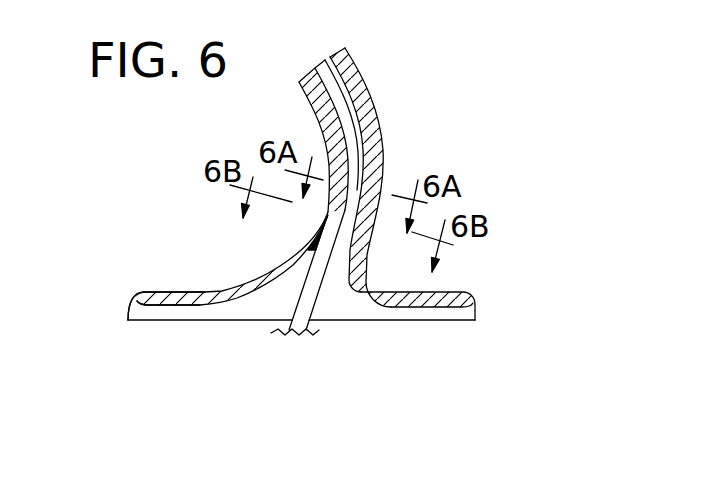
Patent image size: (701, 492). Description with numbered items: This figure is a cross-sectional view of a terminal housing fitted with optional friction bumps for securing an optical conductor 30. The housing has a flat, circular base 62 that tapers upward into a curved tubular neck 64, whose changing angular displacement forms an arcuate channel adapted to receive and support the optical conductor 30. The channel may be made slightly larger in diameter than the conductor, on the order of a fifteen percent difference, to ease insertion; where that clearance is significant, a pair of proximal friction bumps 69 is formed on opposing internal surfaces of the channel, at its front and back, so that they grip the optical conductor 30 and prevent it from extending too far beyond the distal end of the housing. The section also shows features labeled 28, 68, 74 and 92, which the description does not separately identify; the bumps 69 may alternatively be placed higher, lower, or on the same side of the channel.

The tubular member 28 is at (322, 58).
The optical conductor 30 is at (319, 289).
The flat, circular base 62 is at (430, 292).
The tubular neck 64 is at (357, 92).
The inner layer 68 is at (322, 140).
The friction bumps 69 is at (329, 215).
The left flange 74 is at (127, 313).
The base plate 92 is at (475, 304).